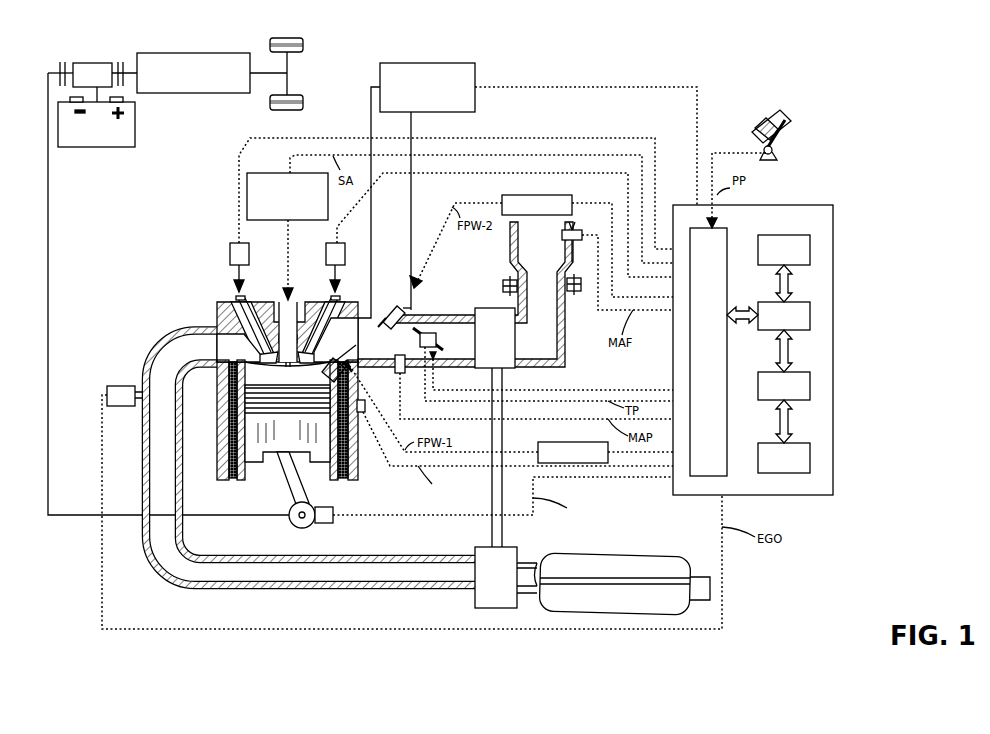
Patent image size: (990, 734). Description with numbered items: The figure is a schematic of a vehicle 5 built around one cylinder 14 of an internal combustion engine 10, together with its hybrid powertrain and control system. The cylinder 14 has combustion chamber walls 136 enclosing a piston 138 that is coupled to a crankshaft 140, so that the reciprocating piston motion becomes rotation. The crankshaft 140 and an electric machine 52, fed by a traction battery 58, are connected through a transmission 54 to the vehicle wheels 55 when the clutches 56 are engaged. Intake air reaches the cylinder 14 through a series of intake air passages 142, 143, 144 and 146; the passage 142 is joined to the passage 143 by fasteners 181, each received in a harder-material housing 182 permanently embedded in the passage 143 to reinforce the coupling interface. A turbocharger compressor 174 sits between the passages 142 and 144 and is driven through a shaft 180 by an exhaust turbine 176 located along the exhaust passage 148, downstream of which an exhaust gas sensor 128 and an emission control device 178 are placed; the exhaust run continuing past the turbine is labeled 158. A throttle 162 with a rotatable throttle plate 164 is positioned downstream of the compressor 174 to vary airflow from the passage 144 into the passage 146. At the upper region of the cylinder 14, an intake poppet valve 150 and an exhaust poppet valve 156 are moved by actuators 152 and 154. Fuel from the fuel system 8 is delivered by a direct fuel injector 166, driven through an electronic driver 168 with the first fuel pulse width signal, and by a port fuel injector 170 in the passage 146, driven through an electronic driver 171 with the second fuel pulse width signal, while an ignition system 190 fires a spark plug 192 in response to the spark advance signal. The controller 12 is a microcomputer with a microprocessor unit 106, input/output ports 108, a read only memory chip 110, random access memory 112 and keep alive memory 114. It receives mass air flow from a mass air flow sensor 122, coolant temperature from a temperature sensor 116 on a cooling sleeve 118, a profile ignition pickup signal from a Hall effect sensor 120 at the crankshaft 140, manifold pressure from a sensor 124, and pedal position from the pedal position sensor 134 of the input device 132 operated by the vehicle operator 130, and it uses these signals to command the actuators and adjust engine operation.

The vehicle 5 is at (808, 568).
The fuel system 8 is at (453, 64).
The internal combustion engine 10 is at (404, 397).
The controller 12 is at (781, 341).
The cylinder 14 is at (274, 381).
The electric machine 52 is at (95, 63).
The transmission 54 is at (238, 93).
The vehicle wheels 55 is at (292, 110).
The clutch 56 is at (60, 66).
The traction battery 58 is at (97, 147).
The microprocessor unit 106 is at (810, 315).
The input/output ports 108 is at (727, 228).
The read only memory chip 110 is at (810, 248).
The random access memory 112 is at (810, 388).
The keep alive memory 114 is at (810, 458).
The temperature sensor 116 is at (372, 450).
The cooling sleeve 118 is at (360, 415).
The Hall effect sensor 120 is at (330, 524).
The mass air flow sensor 122 is at (578, 230).
The manifold pressure sensor 124 is at (402, 375).
The exhaust gas sensor 128 is at (107, 392).
The vehicle operator 130 is at (792, 122).
The input device 132 is at (752, 132).
The pedal position sensor 134 is at (778, 152).
The combustion chamber walls 136 is at (240, 482).
The piston 138 is at (278, 465).
The crankshaft 140 is at (292, 525).
The intake air passage 142 is at (543, 249).
The intake air passage 143 is at (543, 318).
The intake air passage 144 is at (465, 294).
The intake air passage 146 is at (399, 341).
The exhaust passage 148 is at (310, 458).
The intake poppet valve 150 is at (318, 316).
The actuator 152 is at (326, 252).
The actuator 154 is at (230, 250).
The exhaust poppet valve 156 is at (235, 322).
The exhaust passage 158 is at (370, 590).
The throttle 162 is at (432, 328).
The throttle plate 164 is at (422, 332).
The fuel injector 166 is at (333, 360).
The electronic driver 168 is at (538, 444).
The fuel injector 170 is at (394, 306).
The electronic driver 171 is at (503, 197).
The compressor 174 is at (495, 338).
The exhaust turbine 176 is at (496, 577).
The emission control device 178 is at (660, 558).
The shaft 180 is at (504, 525).
The fastener 181 is at (504, 286).
The housing 182 is at (506, 282).
The ignition system 190 is at (262, 173).
The spark plug 192 is at (282, 310).